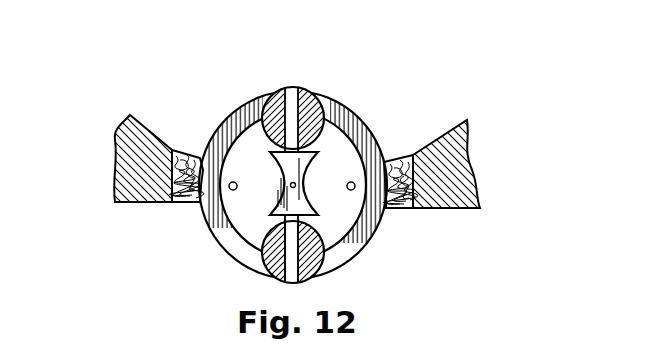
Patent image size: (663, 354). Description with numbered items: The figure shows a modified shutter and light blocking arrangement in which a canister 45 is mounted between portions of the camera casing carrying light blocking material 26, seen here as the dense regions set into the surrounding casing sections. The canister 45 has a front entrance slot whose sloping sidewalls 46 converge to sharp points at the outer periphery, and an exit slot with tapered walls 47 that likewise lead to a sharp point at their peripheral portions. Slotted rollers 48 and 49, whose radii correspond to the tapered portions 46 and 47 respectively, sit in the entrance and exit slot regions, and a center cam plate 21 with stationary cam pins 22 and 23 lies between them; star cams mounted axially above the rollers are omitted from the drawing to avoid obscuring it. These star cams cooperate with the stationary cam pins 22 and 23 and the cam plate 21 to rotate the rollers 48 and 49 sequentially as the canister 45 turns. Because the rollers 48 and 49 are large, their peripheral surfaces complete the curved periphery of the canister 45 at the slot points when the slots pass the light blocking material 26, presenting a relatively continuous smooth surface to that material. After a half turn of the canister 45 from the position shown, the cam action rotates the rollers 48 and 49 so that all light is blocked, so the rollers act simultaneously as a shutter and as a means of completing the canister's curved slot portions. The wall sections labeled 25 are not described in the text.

The center cam plate 21 is at (272, 165).
The cam pin 22 is at (234, 190).
The cam pin 23 is at (350, 182).
The wall 25 is at (447, 133).
The light blocking material 26 is at (398, 162).
The canister 45 is at (361, 121).
The sloping sidewalls 46 is at (264, 95).
The tapered walls 47 is at (322, 266).
The slotted roller 48 is at (316, 138).
The slotted roller 49 is at (319, 237).